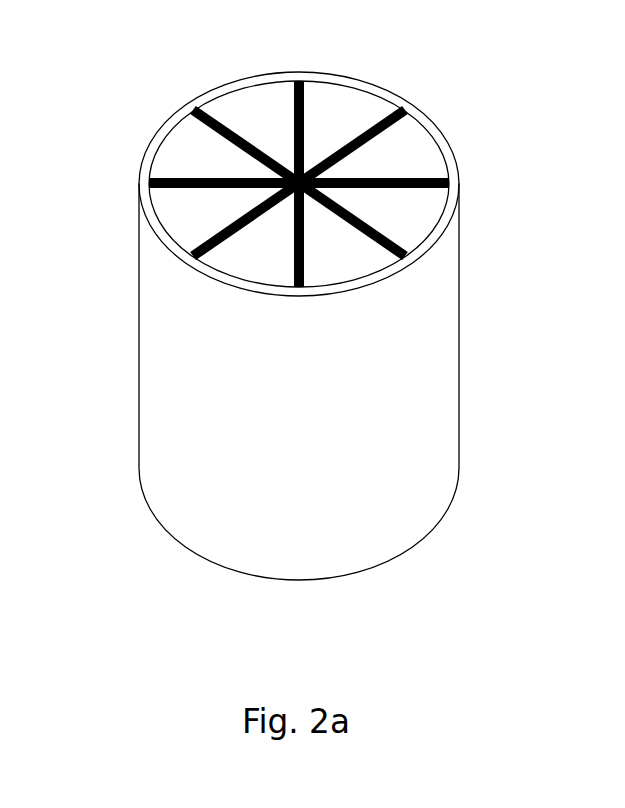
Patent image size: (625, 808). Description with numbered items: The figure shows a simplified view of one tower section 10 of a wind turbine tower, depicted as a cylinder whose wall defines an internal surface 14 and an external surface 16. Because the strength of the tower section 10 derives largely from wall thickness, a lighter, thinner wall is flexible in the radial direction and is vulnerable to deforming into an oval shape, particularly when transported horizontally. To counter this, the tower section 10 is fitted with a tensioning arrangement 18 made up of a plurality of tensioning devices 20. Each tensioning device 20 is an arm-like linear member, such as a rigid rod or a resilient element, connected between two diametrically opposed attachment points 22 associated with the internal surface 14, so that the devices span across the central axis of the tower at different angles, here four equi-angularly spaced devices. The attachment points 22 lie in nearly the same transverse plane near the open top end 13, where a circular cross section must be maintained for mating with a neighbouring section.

The tower section 10 is at (150, 373).
The top end 13 is at (283, 179).
The internal surface 14 is at (172, 149).
The external surface 16 is at (138, 192).
The tensioning arrangement 18 is at (258, 136).
The tensioning devices 20 is at (308, 96).
The attachment points 22 is at (290, 92).